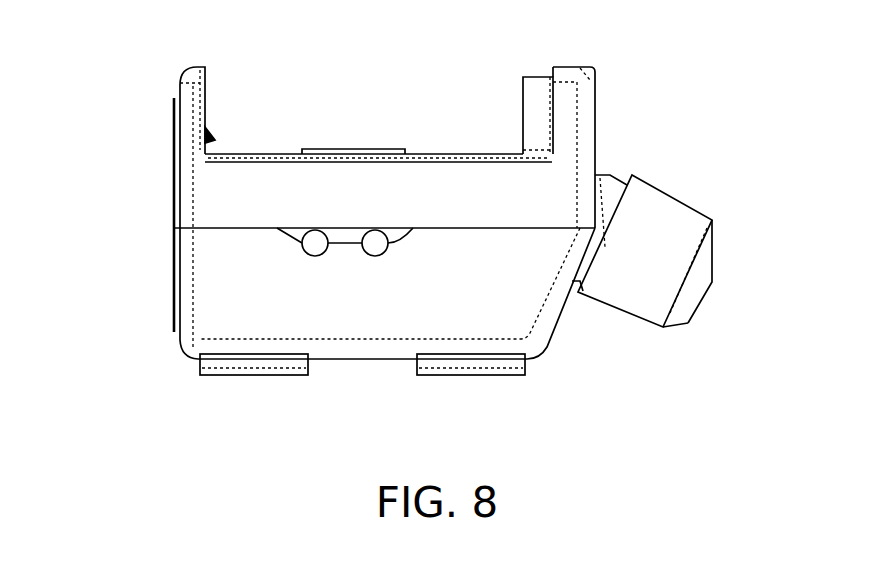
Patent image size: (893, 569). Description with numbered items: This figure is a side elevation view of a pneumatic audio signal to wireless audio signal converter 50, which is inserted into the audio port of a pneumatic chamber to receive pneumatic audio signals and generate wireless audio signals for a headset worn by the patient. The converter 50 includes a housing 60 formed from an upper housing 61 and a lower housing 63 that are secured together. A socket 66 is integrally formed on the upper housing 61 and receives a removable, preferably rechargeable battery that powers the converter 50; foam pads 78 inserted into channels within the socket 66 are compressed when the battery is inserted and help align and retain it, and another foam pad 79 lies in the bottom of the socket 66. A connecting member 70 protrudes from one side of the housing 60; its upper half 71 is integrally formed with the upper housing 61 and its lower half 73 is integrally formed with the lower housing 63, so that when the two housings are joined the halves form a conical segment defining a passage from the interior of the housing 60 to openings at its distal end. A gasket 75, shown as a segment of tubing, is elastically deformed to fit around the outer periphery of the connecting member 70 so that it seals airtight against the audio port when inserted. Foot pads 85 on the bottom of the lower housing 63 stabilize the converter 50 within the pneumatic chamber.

The converter 50 is at (141, 86).
The housing 60 is at (597, 118).
The upper housing 61 is at (500, 210).
The lower housing 63 is at (438, 310).
The socket 66 is at (283, 154).
The connecting member 70 is at (670, 182).
The upper half 71 is at (714, 248).
The lower half 73 is at (687, 325).
The gasket 75 is at (622, 267).
The foam pads 78 is at (527, 77).
The foam pad 79 is at (368, 150).
The foot pads 85 is at (248, 377).